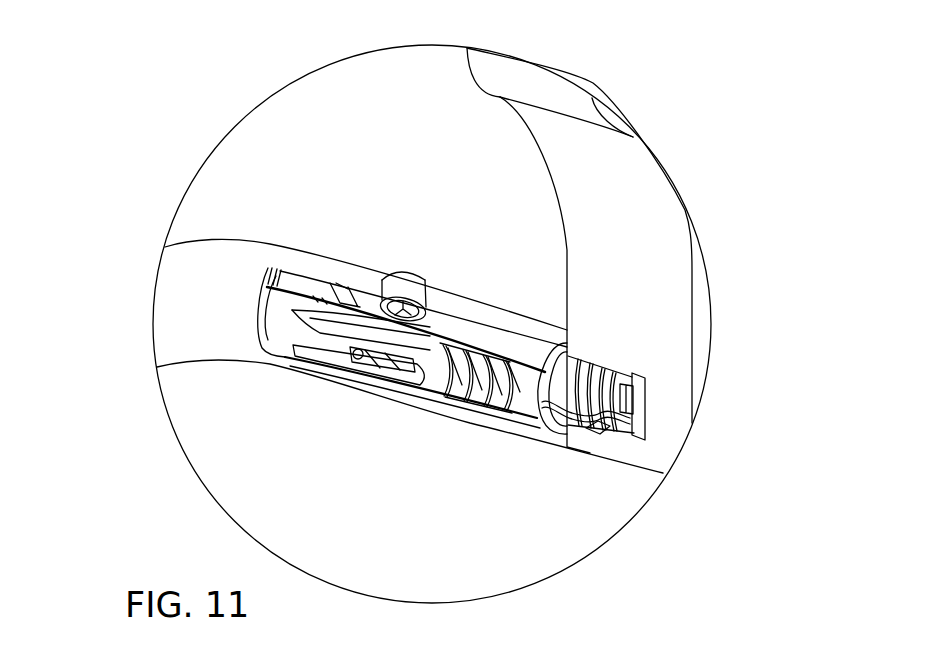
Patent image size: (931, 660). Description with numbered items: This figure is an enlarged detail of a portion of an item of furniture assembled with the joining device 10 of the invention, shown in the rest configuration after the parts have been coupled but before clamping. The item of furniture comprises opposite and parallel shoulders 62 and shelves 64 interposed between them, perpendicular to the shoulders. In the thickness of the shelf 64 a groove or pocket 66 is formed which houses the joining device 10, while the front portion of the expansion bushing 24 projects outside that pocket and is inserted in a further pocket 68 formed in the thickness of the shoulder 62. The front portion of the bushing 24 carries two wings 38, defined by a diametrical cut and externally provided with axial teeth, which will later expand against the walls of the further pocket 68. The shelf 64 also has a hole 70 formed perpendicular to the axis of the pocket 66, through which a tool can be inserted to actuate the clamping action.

The joining device 10 is at (372, 405).
The expansion bushing 24 is at (607, 457).
The wings 38 is at (645, 407).
The shoulders 62 is at (633, 237).
The shelves 64 is at (190, 283).
The grooves or pockets 66 is at (318, 323).
The further pocket 68 is at (640, 430).
The holes 70 is at (405, 282).